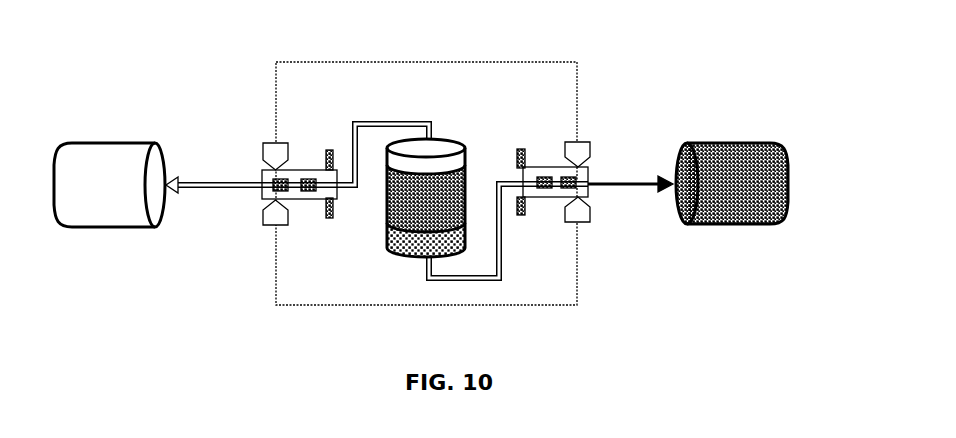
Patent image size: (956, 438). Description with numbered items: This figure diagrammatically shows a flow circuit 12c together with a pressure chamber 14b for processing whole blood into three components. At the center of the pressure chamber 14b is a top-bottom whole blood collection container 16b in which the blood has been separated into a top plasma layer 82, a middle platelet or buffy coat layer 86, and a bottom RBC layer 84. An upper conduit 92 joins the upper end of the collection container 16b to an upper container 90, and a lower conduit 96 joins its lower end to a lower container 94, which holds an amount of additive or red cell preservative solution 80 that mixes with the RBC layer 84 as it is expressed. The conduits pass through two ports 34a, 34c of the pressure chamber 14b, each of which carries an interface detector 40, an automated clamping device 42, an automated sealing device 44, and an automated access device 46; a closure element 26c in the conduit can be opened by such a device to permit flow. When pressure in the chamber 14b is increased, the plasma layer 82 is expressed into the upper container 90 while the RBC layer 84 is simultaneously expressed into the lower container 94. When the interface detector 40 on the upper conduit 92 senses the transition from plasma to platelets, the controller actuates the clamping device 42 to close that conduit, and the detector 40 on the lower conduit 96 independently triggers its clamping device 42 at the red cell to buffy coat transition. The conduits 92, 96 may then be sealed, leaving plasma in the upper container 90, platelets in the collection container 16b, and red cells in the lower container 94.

The pressure chamber 14b is at (568, 58).
The whole blood collection container 16b is at (437, 137).
The plasma layer 82 is at (97, 157).
The upper container 90 is at (148, 143).
The upper conduit 92 is at (205, 181).
The lower conduit 96 is at (470, 280).
The flow circuit 12c is at (624, 174).
The platelet or buffy coat layer 86 is at (466, 197).
The RBC layer 84 is at (387, 242).
The additive or red cell preservative solution 80 is at (742, 160).
The lower container 94 is at (718, 226).
The port 34a is at (302, 207).
The port 34c is at (585, 227).
The interface detector 40 is at (269, 151).
The automated clamping device 42 is at (332, 160).
The automated sealing device 44 is at (261, 193).
The automated access device 46 is at (270, 221).
The closure element 26c is at (547, 176).